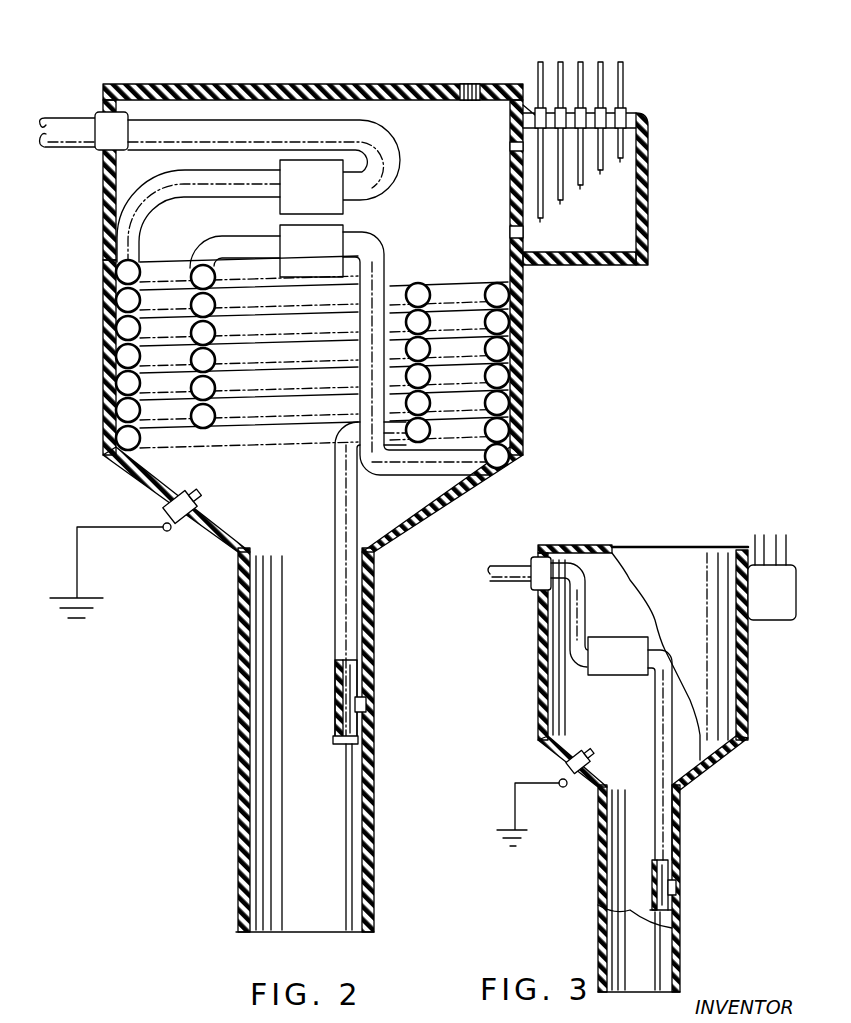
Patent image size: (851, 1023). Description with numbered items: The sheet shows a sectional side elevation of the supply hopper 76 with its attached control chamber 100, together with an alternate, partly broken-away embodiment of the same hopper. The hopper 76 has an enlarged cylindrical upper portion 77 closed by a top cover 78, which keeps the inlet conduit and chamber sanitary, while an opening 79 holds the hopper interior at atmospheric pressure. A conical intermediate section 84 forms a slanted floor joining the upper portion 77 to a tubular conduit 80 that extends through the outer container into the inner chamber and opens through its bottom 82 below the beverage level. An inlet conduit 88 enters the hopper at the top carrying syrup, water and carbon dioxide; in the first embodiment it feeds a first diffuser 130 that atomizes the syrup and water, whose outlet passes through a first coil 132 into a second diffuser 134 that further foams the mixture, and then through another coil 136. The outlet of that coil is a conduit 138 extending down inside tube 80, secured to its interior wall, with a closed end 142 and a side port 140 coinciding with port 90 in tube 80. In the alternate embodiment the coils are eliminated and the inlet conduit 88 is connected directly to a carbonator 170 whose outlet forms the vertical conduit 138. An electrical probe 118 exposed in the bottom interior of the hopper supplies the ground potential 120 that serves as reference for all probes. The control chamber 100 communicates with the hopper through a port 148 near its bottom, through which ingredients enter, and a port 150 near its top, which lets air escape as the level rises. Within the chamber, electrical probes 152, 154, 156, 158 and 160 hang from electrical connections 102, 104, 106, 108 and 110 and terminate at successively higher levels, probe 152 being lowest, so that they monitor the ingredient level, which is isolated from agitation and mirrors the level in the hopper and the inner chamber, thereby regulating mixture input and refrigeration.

In FIG. 2, the supply hopper 76 is at (103, 292).
In FIG. 3, the supply hopper 76 is at (537, 661).
In FIG. 2, the enlarged cylindrical upper portion 77 is at (103, 207).
In FIG. 2, the top cover 78 is at (233, 88).
In FIG. 3, the top cover 78 is at (578, 548).
In FIG. 2, the opening 79 is at (470, 90).
In FIG. 2, the conduit 80 is at (244, 768).
In FIG. 3, the conduit 80 is at (600, 884).
In FIG. 2, the bottom 82 is at (282, 935).
In FIG. 2, the intermediate section 84 is at (398, 532).
In FIG. 2, the conduit 88 is at (60, 123).
In FIG. 3, the conduit 88 is at (515, 566).
In FIG. 2, the port 90 is at (368, 702).
In FIG. 3, the port 90 is at (672, 896).
In FIG. 2, the control chamber 100 is at (650, 172).
In FIG. 3, the control chamber 100 is at (795, 622).
In FIG. 2, the electrical connection 102 is at (540, 72).
In FIG. 2, the electrical connection 104 is at (560, 70).
In FIG. 2, the electrical connection 106 is at (580, 70).
In FIG. 2, the electrical connection 108 is at (602, 70).
In FIG. 2, the electrical connection 110 is at (622, 72).
In FIG. 2, the electrical probe 118 is at (199, 482).
In FIG. 3, the electrical probe 118 is at (583, 756).
In FIG. 2, the ground potential 120 is at (100, 600).
In FIG. 3, the ground potential 120 is at (497, 836).
In FIG. 2, the first diffuser 130 is at (342, 208).
In FIG. 2, the first coil 132 is at (154, 292).
In FIG. 2, the diffuser 134 is at (345, 236).
In FIG. 2, the coil 136 is at (413, 292).
In FIG. 2, the conduit 138 is at (337, 520).
In FIG. 3, the conduit 138 is at (655, 800).
In FIG. 2, the port 140 is at (355, 702).
In FIG. 3, the port 140 is at (654, 898).
In FIG. 2, the closed end 142 is at (340, 744).
In FIG. 3, the closed end 142 is at (676, 918).
In FIG. 2, the port 148 is at (510, 235).
In FIG. 2, the port 150 is at (512, 148).
In FIG. 2, the electrical probe 152 is at (542, 222).
In FIG. 2, the electrical probe 154 is at (561, 202).
In FIG. 2, the electrical probe 156 is at (581, 188).
In FIG. 2, the electrical probe 158 is at (603, 174).
In FIG. 2, the electrical probe 160 is at (623, 162).
In FIG. 3, the carbonator 170 is at (640, 640).